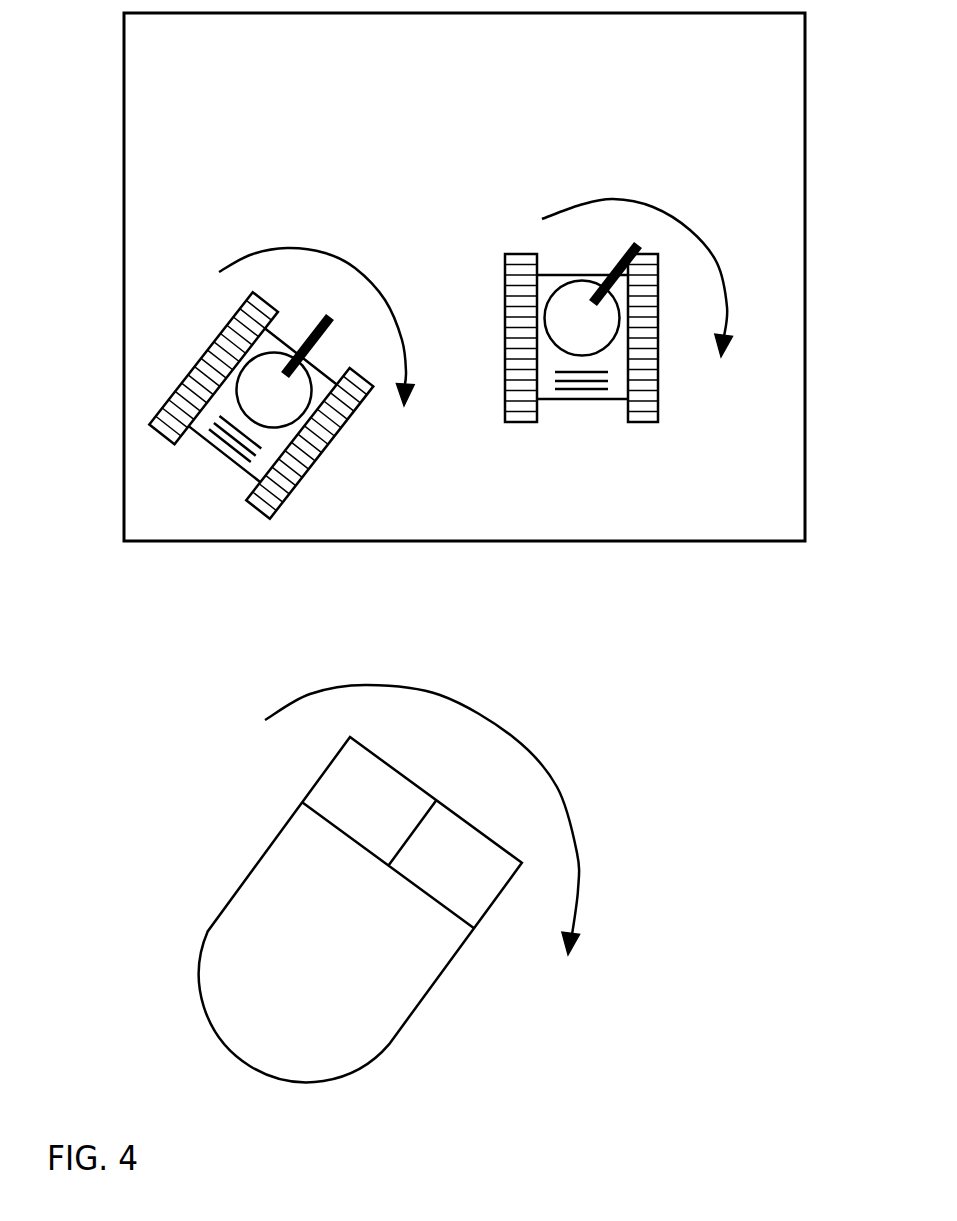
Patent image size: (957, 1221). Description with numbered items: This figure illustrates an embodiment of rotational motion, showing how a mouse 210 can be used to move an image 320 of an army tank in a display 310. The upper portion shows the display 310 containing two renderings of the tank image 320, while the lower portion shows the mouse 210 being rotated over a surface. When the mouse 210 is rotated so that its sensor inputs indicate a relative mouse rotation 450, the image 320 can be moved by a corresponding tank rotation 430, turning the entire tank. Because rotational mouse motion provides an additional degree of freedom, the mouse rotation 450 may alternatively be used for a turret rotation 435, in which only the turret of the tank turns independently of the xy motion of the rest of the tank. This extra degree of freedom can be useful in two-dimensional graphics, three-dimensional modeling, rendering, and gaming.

The display 310 is at (383, 85).
The image 320 is at (332, 465).
The tank rotation 430 is at (330, 258).
The turret rotation 435 is at (647, 208).
The mouse 210 is at (222, 923).
The mouse rotation 450 is at (580, 873).